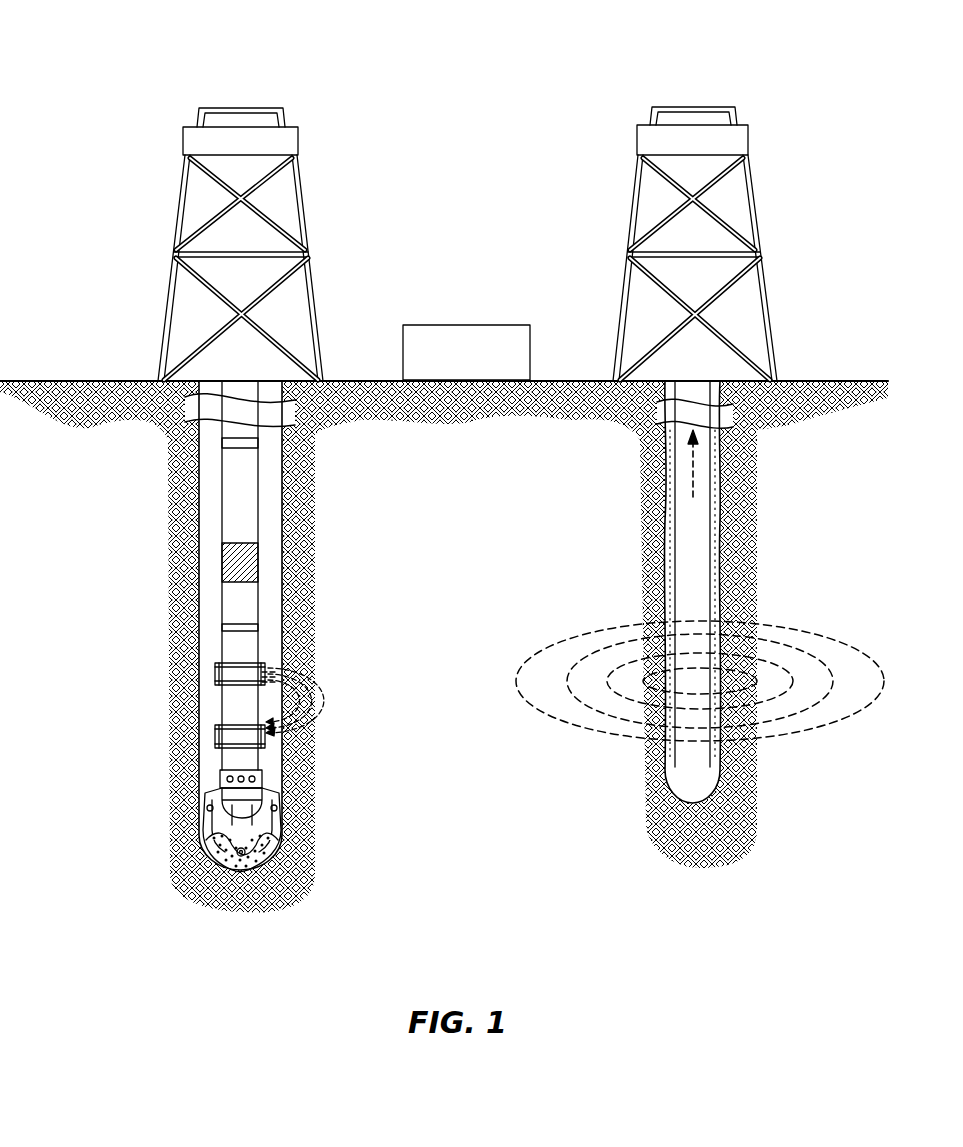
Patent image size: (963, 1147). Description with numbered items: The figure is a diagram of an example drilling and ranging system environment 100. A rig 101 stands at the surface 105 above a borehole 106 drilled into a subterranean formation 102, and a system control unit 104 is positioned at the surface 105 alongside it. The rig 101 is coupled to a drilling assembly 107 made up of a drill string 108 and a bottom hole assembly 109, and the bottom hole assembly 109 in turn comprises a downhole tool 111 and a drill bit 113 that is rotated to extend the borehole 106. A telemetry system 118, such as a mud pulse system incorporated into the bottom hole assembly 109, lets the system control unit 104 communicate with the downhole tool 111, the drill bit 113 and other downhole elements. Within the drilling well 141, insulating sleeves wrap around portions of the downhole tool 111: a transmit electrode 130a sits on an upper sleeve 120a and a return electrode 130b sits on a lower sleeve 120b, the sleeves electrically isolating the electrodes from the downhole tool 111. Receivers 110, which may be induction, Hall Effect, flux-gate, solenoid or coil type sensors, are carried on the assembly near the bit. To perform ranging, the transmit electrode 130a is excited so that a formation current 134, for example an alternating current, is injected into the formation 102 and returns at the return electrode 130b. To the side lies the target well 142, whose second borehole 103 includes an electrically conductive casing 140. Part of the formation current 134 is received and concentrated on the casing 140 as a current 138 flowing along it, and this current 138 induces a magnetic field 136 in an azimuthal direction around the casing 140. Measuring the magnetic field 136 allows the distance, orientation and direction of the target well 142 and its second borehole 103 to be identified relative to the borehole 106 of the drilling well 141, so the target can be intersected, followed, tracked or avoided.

The drilling and ranging system environment 100 is at (119, 45).
The rig 101 is at (183, 142).
The subterranean formation 102 is at (472, 430).
The second borehole 103 is at (720, 592).
The system control unit 104 is at (466, 352).
The surface 105 is at (587, 380).
The borehole 106 is at (197, 480).
The drilling assembly 107 is at (149, 588).
The drill string 108 is at (220, 513).
The bottom hole assembly 109 is at (98, 597).
The receivers 110 is at (218, 778).
The downhole tool 111 is at (163, 652).
The drill bit 113 is at (203, 827).
The telemetry system 118 is at (259, 564).
The sleeve 120a is at (267, 663).
The sleeve 120b is at (267, 747).
The transmit electrode 130a is at (267, 670).
The return electrode 130b is at (267, 740).
The formation current 134 is at (327, 707).
The magnetic field 136 is at (558, 720).
The current 138 is at (695, 475).
The casing 140 is at (712, 753).
The drilling well 141 is at (345, 204).
The target well 142 is at (793, 208).